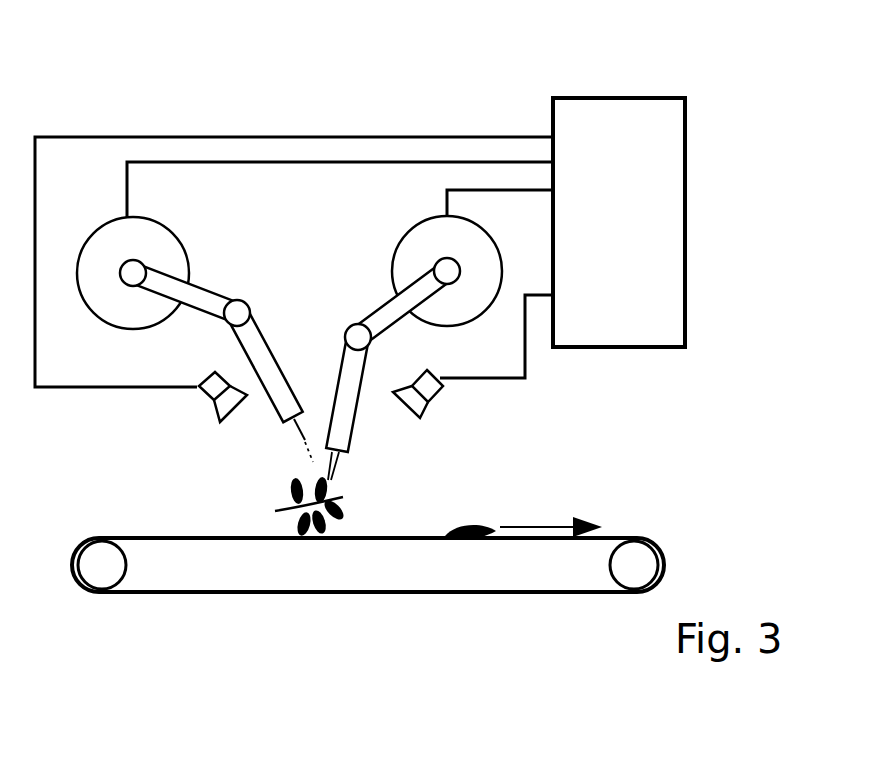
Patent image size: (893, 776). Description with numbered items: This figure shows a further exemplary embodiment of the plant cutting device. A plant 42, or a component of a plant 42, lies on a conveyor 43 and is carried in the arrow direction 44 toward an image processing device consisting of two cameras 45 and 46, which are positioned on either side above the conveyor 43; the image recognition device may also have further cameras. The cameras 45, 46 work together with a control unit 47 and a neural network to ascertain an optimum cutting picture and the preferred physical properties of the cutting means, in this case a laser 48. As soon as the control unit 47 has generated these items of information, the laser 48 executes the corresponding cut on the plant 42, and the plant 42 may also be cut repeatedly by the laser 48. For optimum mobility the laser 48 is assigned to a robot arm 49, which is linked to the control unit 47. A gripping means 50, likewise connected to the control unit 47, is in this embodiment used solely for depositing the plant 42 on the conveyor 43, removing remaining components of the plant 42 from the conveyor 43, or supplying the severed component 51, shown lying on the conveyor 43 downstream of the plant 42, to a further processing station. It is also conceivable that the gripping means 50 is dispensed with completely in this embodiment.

The plant 42 is at (290, 488).
The conveyor 43 is at (647, 537).
The arrow direction 44 is at (535, 525).
The camera 45 is at (203, 397).
The camera 46 is at (440, 395).
The control unit 47 is at (688, 170).
The laser 48 is at (273, 338).
The robot arm 49 is at (197, 284).
The gripping means 50 is at (373, 315).
The severed component 51 is at (473, 523).